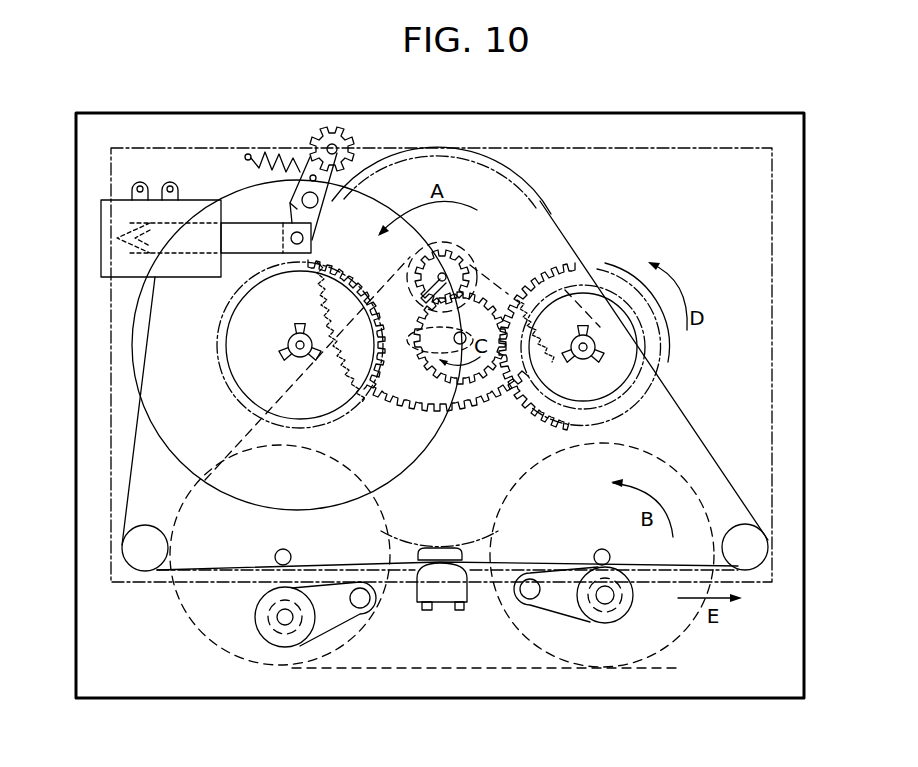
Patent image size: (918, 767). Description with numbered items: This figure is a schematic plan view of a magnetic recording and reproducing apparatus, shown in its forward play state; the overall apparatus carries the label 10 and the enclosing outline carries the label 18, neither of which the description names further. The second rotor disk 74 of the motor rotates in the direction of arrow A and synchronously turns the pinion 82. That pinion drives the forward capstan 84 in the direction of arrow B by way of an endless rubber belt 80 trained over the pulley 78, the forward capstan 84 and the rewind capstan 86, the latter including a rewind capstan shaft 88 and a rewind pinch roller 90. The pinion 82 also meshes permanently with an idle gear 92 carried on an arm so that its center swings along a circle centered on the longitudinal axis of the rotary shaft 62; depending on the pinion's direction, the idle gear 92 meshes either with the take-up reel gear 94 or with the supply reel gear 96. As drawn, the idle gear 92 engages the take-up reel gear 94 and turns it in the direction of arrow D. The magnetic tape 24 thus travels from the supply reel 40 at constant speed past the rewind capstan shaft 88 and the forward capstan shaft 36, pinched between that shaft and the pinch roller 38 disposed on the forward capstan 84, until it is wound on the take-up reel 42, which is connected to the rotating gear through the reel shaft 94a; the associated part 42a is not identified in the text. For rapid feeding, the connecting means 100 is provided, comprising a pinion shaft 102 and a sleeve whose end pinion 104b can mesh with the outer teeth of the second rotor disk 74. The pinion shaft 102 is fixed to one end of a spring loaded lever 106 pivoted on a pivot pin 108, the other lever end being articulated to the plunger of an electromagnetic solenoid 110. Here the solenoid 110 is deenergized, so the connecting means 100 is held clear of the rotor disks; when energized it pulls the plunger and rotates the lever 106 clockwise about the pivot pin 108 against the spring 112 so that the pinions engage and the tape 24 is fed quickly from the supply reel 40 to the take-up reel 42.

The tape recording/reproducing apparatus 10 is at (806, 297).
The cassette housing 18 is at (780, 372).
The magnetic tape 24 is at (708, 443).
The forward capstan shaft 36 is at (600, 549).
The pinch roller 38 is at (622, 614).
The supply reel 40 is at (148, 323).
The take-up reel 42 is at (533, 408).
The reel hub flange 42a is at (577, 322).
The rotary shaft 62 is at (413, 301).
The second rotor disk 74 is at (517, 172).
The pulley 78 is at (498, 285).
The endless rubber belt 80 is at (642, 438).
The pinion 82 is at (457, 247).
The forward capstan 84 is at (603, 655).
The rewind capstan 86 is at (249, 653).
The rewind capstan shaft 88 is at (290, 550).
The rewind pinch roller 90 is at (297, 640).
The idle gear 92 is at (421, 378).
The take-up reel gear 94 is at (639, 277).
The reel shaft 94a is at (582, 350).
The supply reel gear 96 is at (227, 381).
The connecting means 100 is at (303, 144).
The pinion shaft 102 is at (348, 135).
The pinion 104b is at (328, 131).
The spring loaded lever 106 is at (297, 209).
The pivot pin 108 is at (318, 202).
The electromagnetic solenoid 110 is at (198, 200).
The spring 112 is at (263, 150).